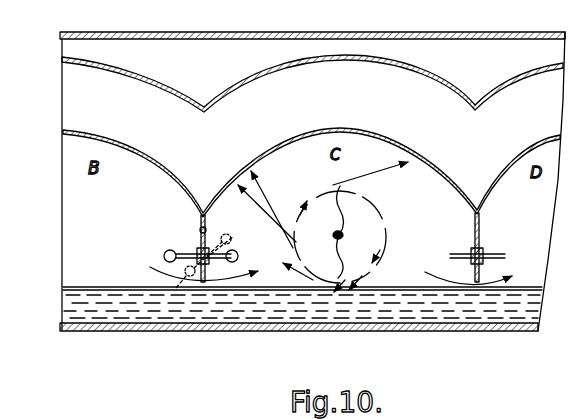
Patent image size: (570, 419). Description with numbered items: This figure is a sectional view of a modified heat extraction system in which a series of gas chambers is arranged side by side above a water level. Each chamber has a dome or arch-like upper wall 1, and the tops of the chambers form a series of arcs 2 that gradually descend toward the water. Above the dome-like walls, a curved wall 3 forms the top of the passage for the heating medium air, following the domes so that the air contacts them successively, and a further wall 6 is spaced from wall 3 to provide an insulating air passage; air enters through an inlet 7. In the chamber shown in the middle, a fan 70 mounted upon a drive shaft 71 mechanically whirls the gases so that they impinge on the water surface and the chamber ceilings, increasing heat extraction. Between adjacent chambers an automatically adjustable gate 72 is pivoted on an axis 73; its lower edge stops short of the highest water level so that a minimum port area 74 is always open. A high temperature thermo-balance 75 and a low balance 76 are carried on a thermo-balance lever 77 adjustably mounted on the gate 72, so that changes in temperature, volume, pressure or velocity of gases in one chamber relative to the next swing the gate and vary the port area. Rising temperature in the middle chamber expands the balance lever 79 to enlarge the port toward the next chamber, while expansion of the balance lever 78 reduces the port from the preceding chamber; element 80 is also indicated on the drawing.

The dome or arch-like upper wall 1 is at (362, 131).
The chamber top arc 2 is at (208, 221).
The wall 3 is at (258, 73).
The wall 6 is at (302, 34).
The inlet 7 is at (565, 231).
The fan 70 is at (347, 202).
The drive shaft 71 is at (345, 237).
The automatically adjustable gate 72 is at (186, 270).
The axis 73 is at (200, 228).
The minimum port area 74 is at (193, 284).
The high temperature thermo-balance 75 is at (165, 252).
The low balance 76 is at (240, 256).
The thermo-balance lever 77 is at (189, 252).
The balance lever 78 is at (214, 263).
The balance lever 79 is at (462, 259).
The lever 80 is at (484, 251).